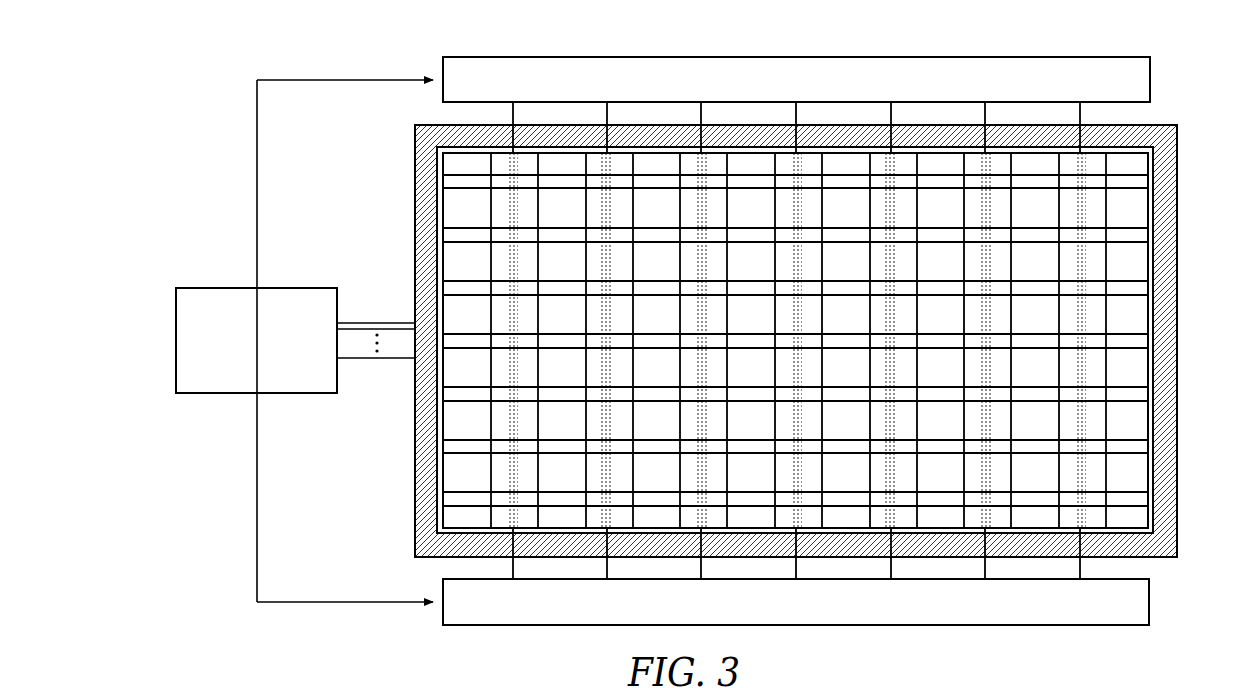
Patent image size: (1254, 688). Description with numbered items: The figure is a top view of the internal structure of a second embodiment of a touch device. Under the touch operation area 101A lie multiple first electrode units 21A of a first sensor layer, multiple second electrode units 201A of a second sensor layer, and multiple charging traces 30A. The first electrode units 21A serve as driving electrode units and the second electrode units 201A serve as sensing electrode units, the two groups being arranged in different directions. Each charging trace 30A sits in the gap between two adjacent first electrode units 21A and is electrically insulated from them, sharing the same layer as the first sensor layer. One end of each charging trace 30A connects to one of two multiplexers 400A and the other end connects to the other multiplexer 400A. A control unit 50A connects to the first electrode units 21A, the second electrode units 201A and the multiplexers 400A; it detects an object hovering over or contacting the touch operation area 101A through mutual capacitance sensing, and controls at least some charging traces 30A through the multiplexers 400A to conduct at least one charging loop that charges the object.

The multiplexer 400A is at (1140, 80).
The charging trace 30A is at (515, 165).
The first electrode unit 21A is at (562, 172).
The second electrode unit 201A is at (1140, 180).
The control unit 50A is at (202, 287).
The touch operation area 101A is at (367, 684).